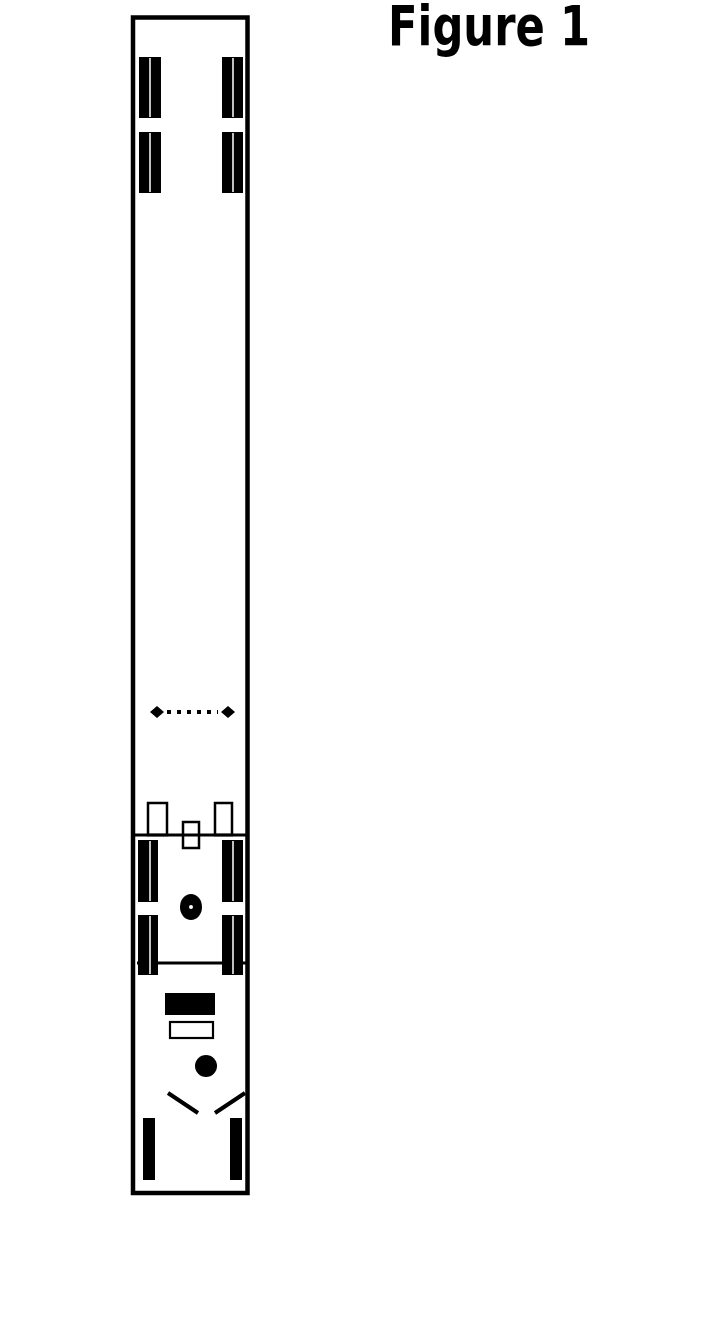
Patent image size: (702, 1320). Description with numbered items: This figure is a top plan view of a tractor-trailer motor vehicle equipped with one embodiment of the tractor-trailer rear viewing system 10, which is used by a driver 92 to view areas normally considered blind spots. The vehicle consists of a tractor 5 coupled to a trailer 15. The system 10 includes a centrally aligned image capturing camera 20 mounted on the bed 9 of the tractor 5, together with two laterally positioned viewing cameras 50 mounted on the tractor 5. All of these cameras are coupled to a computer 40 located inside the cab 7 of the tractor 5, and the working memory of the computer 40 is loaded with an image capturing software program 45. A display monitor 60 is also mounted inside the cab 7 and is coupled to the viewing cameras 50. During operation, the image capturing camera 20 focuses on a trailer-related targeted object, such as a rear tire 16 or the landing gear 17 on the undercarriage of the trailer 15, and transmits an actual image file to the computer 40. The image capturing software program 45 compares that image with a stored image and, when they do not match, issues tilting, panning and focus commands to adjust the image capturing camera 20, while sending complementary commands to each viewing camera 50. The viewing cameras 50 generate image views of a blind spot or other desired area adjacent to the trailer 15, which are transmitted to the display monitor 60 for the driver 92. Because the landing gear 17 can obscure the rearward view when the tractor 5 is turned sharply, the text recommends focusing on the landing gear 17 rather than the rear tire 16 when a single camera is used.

The trailer 15 is at (131, 352).
The rear tire 16 is at (128, 78).
The landing gear 17 is at (193, 708).
The image capturing camera 20 is at (193, 822).
The viewing camera 50 is at (160, 803).
The bed 9 is at (197, 945).
The tractor 5 is at (113, 840).
The tractor-trailer rear viewing system 10 is at (363, 797).
The computer 40 is at (217, 1003).
The image capturing software program 45 is at (213, 1028).
The driver 92 is at (217, 1065).
The display monitor 60 is at (183, 1107).
The cab 7 is at (207, 1193).